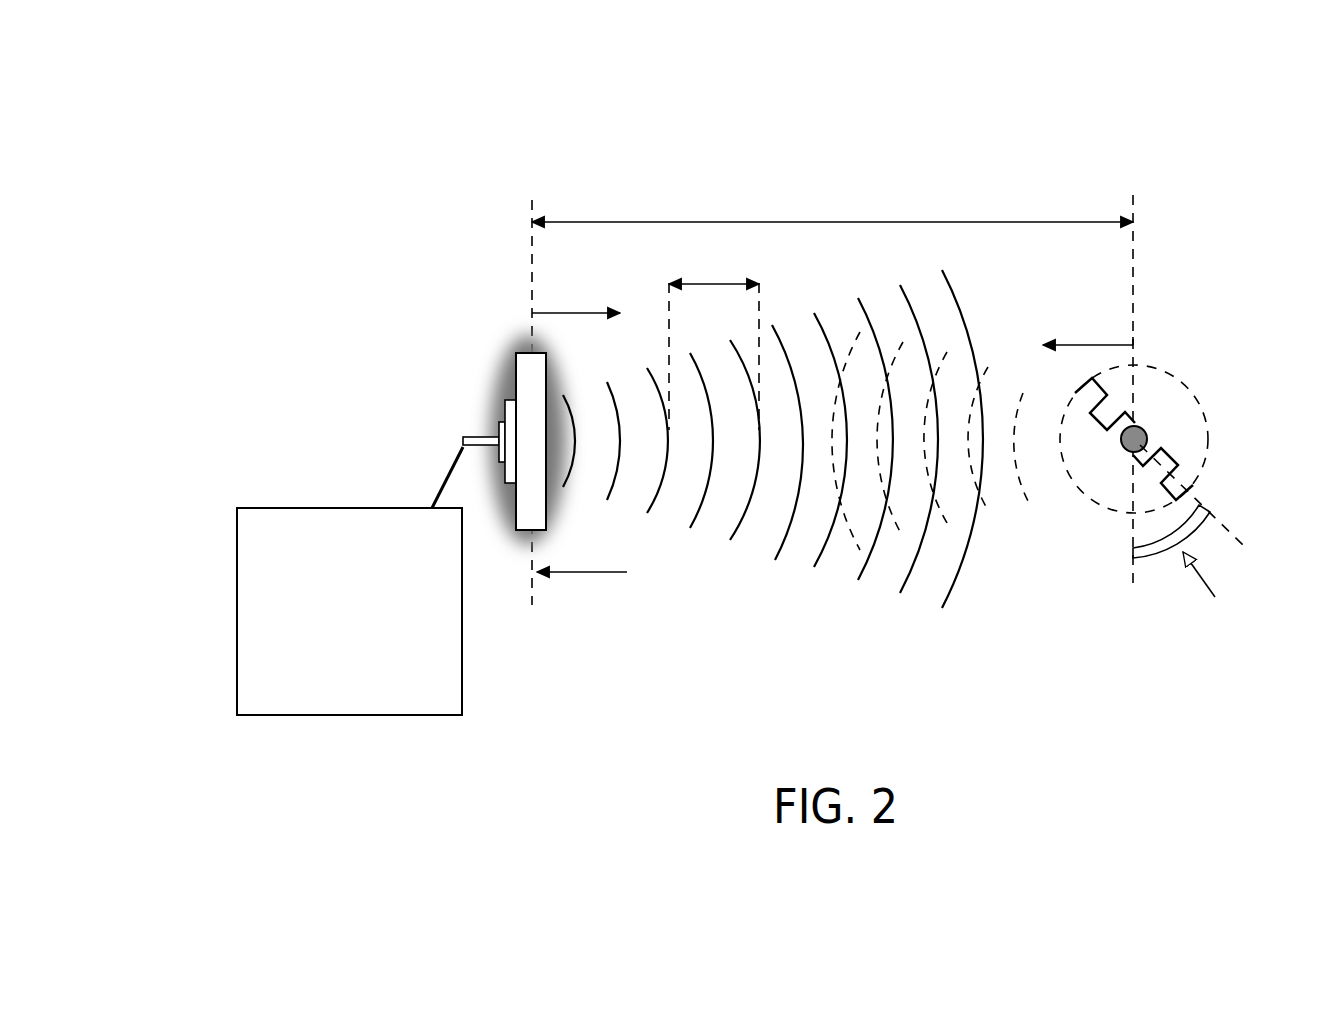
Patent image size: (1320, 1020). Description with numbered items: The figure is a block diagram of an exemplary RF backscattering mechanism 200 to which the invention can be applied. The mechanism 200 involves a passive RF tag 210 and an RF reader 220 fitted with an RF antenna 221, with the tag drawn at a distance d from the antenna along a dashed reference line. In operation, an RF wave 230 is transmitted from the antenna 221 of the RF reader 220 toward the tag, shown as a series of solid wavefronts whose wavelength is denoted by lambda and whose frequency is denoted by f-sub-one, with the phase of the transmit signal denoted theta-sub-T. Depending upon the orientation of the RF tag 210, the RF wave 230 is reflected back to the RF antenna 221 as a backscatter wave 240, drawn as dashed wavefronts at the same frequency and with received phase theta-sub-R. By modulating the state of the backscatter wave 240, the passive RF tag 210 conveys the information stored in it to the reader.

The RF backscattering mechanism 200 is at (197, 74).
The passive RF tag 210 is at (1151, 423).
The RF reader 220 is at (372, 661).
The RF antenna 221 is at (469, 419).
The RF wave 230 is at (770, 552).
The backscatter wave 240 is at (1083, 503).